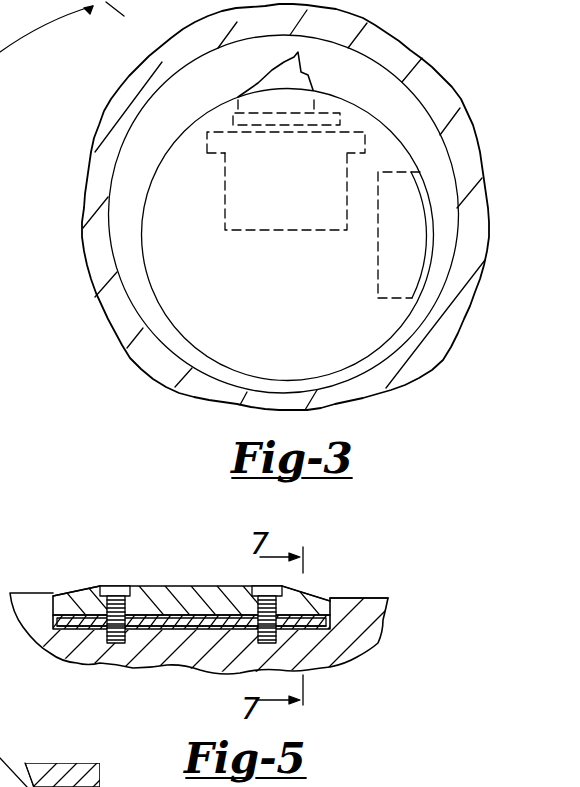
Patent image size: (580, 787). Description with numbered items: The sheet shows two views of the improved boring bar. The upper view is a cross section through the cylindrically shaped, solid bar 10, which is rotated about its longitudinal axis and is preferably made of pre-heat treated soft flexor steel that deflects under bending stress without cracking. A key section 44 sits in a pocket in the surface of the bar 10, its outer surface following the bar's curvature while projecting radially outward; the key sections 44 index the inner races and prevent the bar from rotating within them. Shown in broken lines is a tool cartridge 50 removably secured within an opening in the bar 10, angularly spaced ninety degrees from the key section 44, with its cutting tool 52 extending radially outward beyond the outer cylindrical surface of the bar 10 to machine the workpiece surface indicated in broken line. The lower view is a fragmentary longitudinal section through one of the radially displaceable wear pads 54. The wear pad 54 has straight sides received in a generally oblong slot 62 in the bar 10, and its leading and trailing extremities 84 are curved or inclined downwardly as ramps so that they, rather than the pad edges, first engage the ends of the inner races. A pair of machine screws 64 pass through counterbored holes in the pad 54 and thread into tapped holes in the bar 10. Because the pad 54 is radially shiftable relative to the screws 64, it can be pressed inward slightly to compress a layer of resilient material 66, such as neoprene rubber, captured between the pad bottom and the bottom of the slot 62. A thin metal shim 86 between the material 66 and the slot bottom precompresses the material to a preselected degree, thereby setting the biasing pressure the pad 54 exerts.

In FIG. 3, the bar 10 is at (277, 319).
In FIG. 5, the bar 10 is at (188, 657).
In FIG. 3, the key sections 44 is at (380, 246).
In FIG. 3, the tool cartridges 50 is at (245, 221).
In FIG. 3, the cutting tool 52 is at (276, 73).
In FIG. 5, the wear pads 54 is at (167, 594).
In FIG. 5, the slots 62 is at (330, 600).
In FIG. 5, the machine screws 64 is at (114, 596).
In FIG. 5, the resilient material 66 is at (318, 620).
In FIG. 5, the extremities 84 is at (72, 592).
In FIG. 5, the shim 86 is at (78, 630).